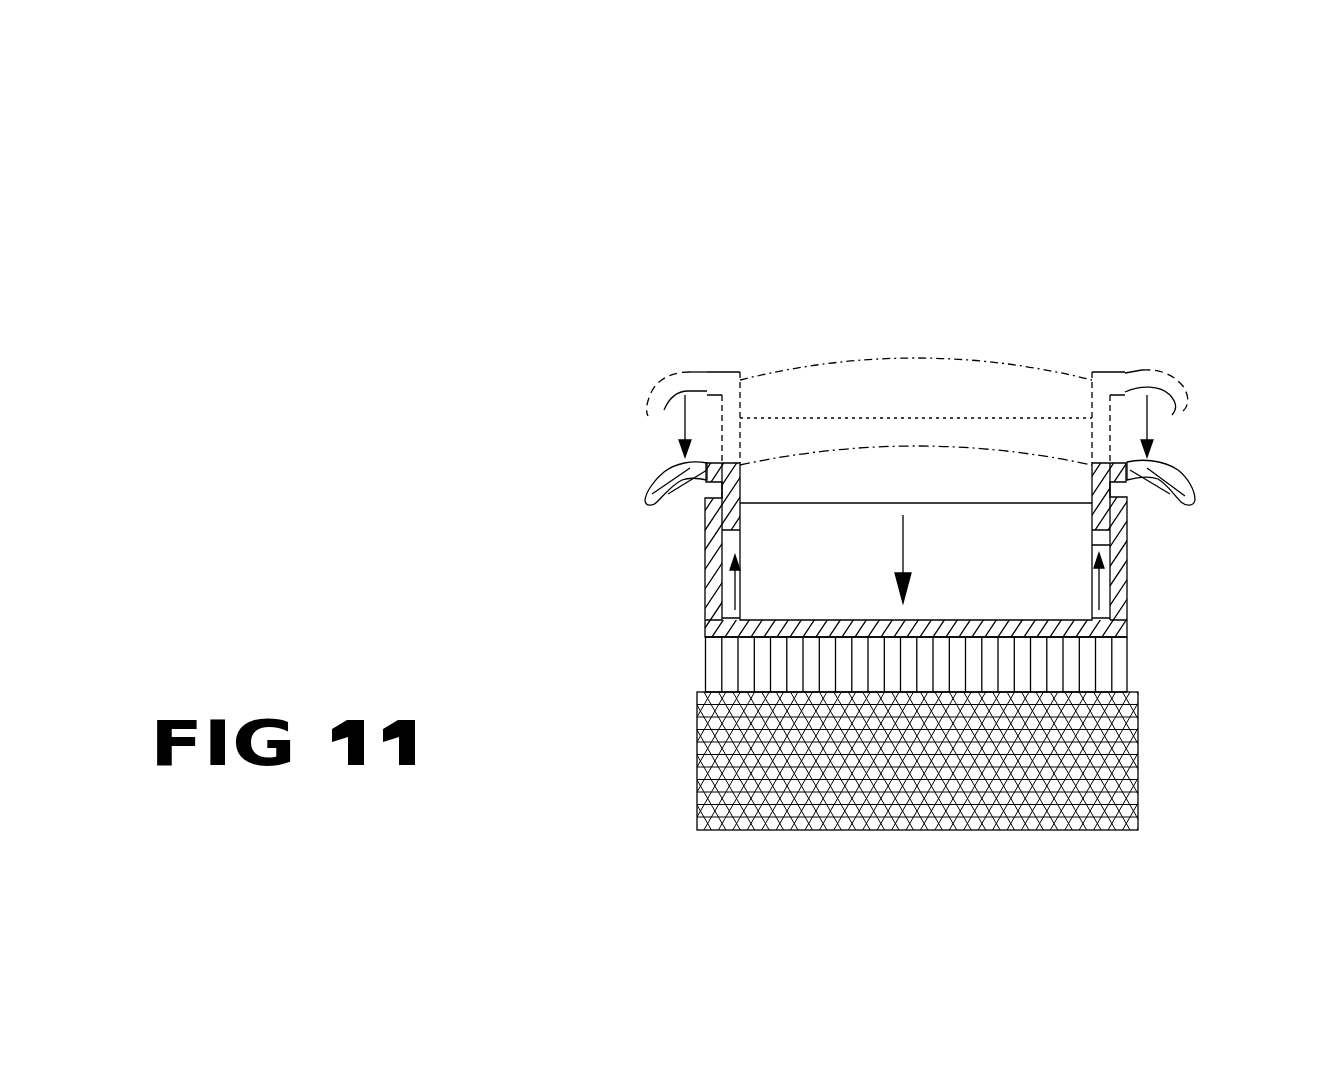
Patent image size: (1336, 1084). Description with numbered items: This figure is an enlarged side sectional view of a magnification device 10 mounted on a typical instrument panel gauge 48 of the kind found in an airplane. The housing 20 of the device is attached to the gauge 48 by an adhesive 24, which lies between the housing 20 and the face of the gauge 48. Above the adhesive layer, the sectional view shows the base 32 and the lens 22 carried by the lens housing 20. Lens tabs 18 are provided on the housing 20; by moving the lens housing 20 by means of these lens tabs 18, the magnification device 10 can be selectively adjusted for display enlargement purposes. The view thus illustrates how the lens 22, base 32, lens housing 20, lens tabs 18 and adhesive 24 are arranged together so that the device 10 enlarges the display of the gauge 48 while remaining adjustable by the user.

The magnification device 10 is at (1168, 243).
The lens tabs 18 is at (1155, 457).
The lens housing 20 is at (688, 462).
The lens 22 is at (885, 443).
The adhesive 24 is at (1123, 662).
The base 32 is at (1128, 500).
The instrument panel gauge 48 is at (1075, 802).